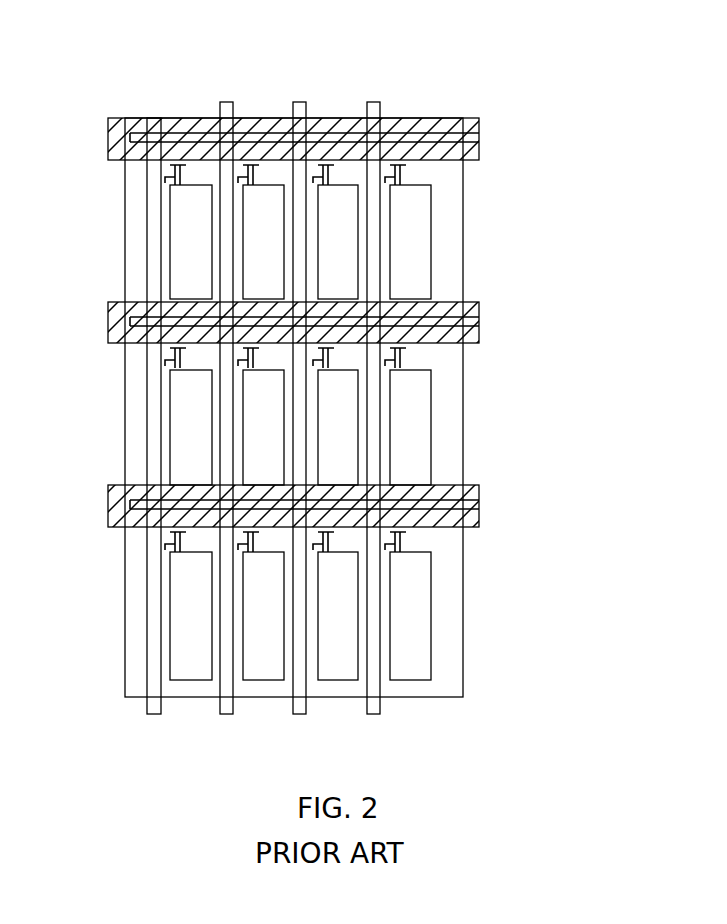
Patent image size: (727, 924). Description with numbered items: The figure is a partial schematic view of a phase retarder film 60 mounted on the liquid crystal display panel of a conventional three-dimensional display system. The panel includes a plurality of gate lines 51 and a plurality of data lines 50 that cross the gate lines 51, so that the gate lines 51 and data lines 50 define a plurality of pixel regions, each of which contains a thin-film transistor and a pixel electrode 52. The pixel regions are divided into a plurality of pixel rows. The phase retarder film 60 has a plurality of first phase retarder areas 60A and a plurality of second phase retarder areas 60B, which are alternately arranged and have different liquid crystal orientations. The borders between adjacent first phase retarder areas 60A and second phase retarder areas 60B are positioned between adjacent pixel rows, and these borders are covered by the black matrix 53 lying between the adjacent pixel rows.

The data line 50 is at (228, 100).
The gate line 51 is at (272, 133).
The pixel electrode 52 is at (150, 208).
The black matrix 53 is at (479, 152).
The phase retarder film 60 is at (520, 322).
The first phase retarder area 60A is at (463, 222).
The second phase retarder area 60B is at (463, 403).